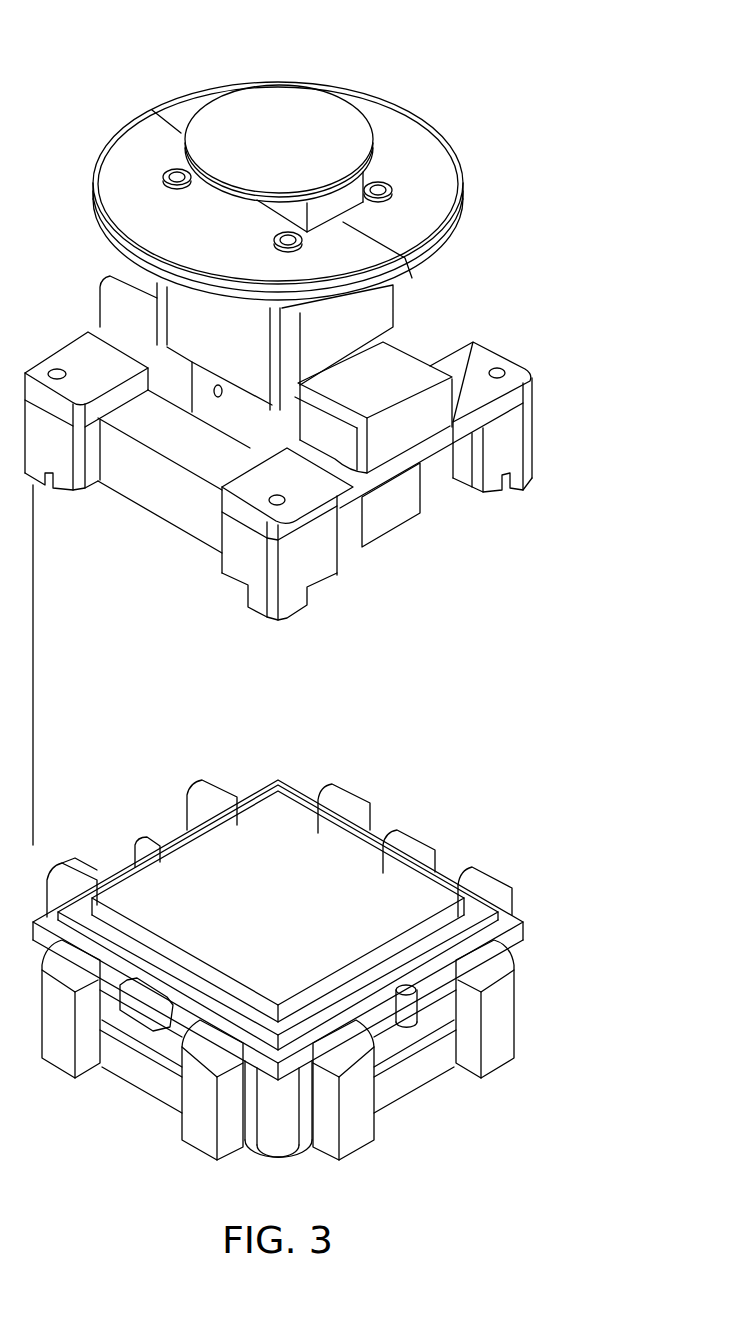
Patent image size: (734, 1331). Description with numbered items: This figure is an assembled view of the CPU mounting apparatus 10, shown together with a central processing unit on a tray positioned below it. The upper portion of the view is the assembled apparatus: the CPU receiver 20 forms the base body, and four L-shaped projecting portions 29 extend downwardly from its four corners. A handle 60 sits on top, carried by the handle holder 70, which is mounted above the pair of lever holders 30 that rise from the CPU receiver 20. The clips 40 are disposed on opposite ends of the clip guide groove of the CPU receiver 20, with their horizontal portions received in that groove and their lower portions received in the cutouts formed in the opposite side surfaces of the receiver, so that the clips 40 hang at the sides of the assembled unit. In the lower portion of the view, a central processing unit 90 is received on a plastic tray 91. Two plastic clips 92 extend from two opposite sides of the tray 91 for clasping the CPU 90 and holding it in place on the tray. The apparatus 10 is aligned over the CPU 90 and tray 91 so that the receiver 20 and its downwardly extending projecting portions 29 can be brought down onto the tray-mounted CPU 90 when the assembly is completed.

The CPU mounting apparatus 10 is at (140, 50).
The CPU receiver 20 is at (320, 476).
The projecting portion 29 is at (513, 475).
The lever holder 30 is at (402, 360).
The clip 40 is at (392, 500).
The handle 60 is at (338, 125).
The handle holder 70 is at (430, 178).
The central processing unit (CPU) 90 is at (408, 887).
The plastic tray 91 is at (492, 1040).
The plastic clip 92 is at (407, 1010).